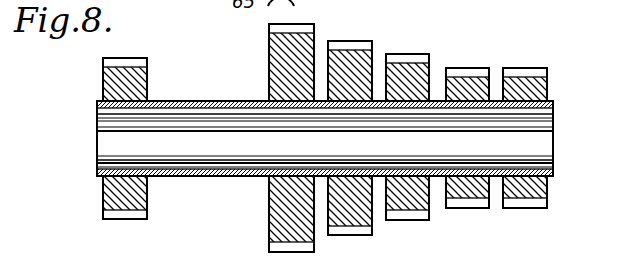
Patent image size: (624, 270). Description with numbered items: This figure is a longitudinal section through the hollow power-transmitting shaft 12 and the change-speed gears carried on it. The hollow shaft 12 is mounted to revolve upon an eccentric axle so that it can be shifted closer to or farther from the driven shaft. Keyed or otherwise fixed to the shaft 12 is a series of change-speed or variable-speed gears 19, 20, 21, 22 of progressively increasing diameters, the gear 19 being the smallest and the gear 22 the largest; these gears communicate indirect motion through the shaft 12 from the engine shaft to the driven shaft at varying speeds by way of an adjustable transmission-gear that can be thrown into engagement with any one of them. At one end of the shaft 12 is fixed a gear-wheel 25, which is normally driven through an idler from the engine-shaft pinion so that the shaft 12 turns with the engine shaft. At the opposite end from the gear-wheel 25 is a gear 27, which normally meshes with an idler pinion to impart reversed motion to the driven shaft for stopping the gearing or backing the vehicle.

The gear-wheel 25 is at (103, 78).
The change-speed gear 22 is at (270, 53).
The change-speed gear 21 is at (347, 46).
The change-speed gear 20 is at (406, 58).
The change-speed gear 19 is at (466, 70).
The gear 27 is at (526, 70).
The hollow power-transmitting shaft 12 is at (98, 138).